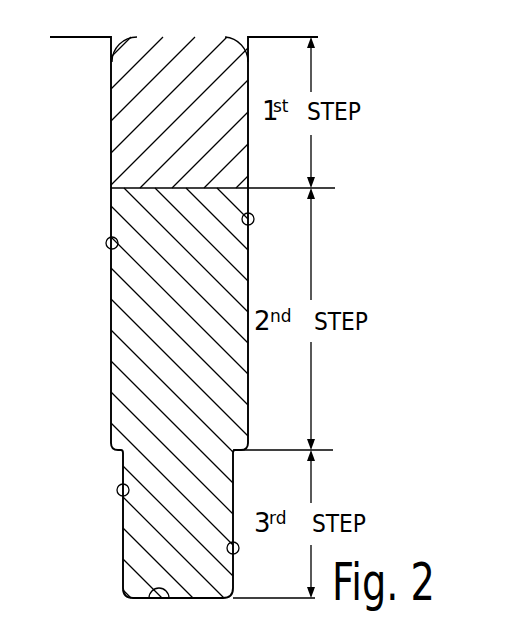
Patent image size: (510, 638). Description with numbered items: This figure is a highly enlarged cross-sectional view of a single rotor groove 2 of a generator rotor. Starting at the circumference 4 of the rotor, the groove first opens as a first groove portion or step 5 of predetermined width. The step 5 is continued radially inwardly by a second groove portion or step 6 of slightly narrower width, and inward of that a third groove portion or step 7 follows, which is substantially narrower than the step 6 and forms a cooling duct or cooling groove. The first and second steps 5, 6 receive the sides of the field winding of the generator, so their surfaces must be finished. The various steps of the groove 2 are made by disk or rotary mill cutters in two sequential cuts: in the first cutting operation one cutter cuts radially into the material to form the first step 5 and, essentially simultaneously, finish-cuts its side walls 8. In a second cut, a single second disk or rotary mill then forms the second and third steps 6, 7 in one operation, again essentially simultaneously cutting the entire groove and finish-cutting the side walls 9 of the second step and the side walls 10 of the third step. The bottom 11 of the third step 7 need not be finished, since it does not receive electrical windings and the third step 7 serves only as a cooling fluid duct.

The rotor groove 2 is at (101, 359).
The circumference 4 is at (82, 37).
The first groove portion or step 5 is at (132, 115).
The second groove portion or step 6 is at (118, 291).
The third groove portion or step 7 is at (132, 542).
The side walls 8 is at (137, 37).
The side walls 9 is at (106, 245).
The side walls 10 is at (118, 492).
The bottom 11 is at (169, 598).